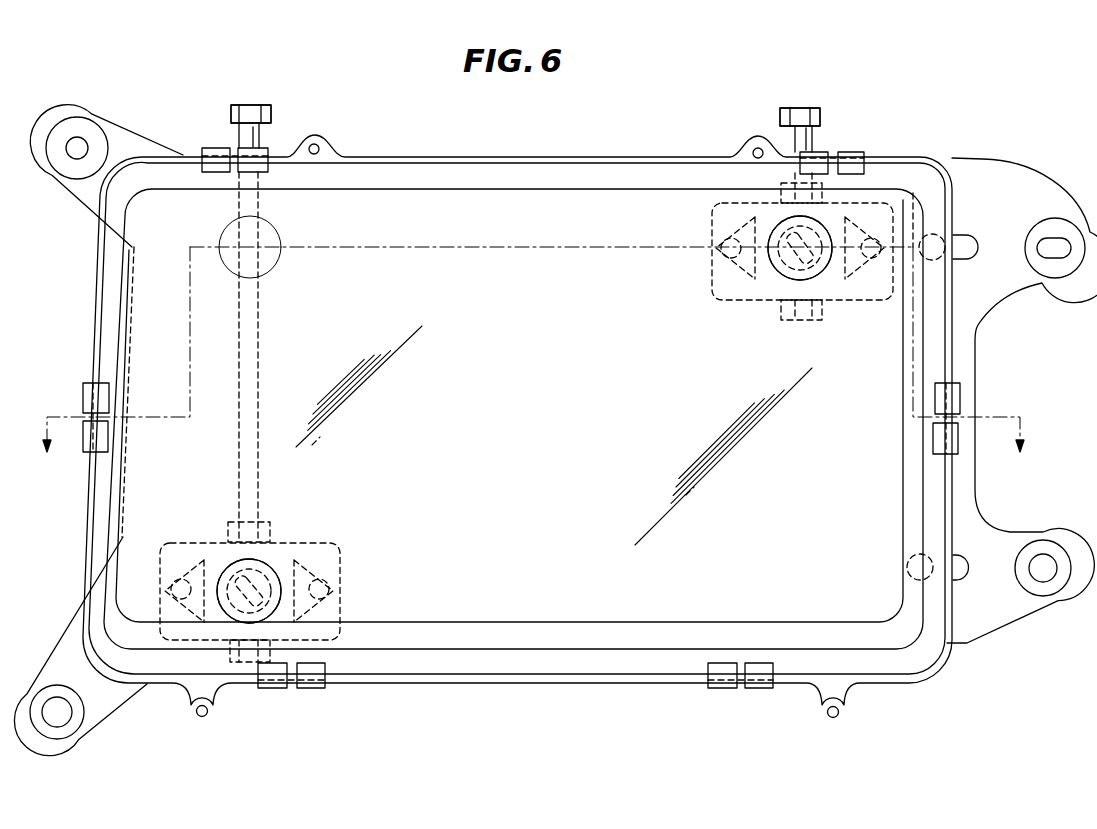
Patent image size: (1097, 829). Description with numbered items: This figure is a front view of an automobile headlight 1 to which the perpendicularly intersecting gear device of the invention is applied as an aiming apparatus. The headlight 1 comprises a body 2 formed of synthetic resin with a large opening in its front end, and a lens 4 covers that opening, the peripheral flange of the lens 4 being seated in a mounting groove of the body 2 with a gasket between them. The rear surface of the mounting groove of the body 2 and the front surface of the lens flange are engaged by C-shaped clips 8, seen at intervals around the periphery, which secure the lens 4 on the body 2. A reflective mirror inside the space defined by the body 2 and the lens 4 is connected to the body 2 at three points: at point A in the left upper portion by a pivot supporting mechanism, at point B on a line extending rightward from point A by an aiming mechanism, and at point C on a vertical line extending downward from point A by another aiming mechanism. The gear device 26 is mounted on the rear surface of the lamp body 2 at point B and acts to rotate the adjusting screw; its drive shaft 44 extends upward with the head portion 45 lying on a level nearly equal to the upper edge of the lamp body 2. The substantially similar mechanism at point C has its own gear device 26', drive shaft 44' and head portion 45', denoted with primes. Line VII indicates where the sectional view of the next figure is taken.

The headlight 1 is at (944, 99).
The body 2 is at (558, 684).
The lens 4 is at (468, 605).
The C-shaped clips 8 is at (214, 150).
The perpendicularly intersecting gear device 26 is at (771, 269).
The perpendicularly intersecting gear device 26' is at (250, 557).
The drive shaft 44 is at (771, 210).
The drive shaft 44' is at (228, 362).
The head portion 45 is at (824, 106).
The head portion 45' is at (283, 106).
The point A is at (282, 268).
The point B is at (784, 280).
The point C is at (268, 560).
The line VII— VII is at (532, 364).